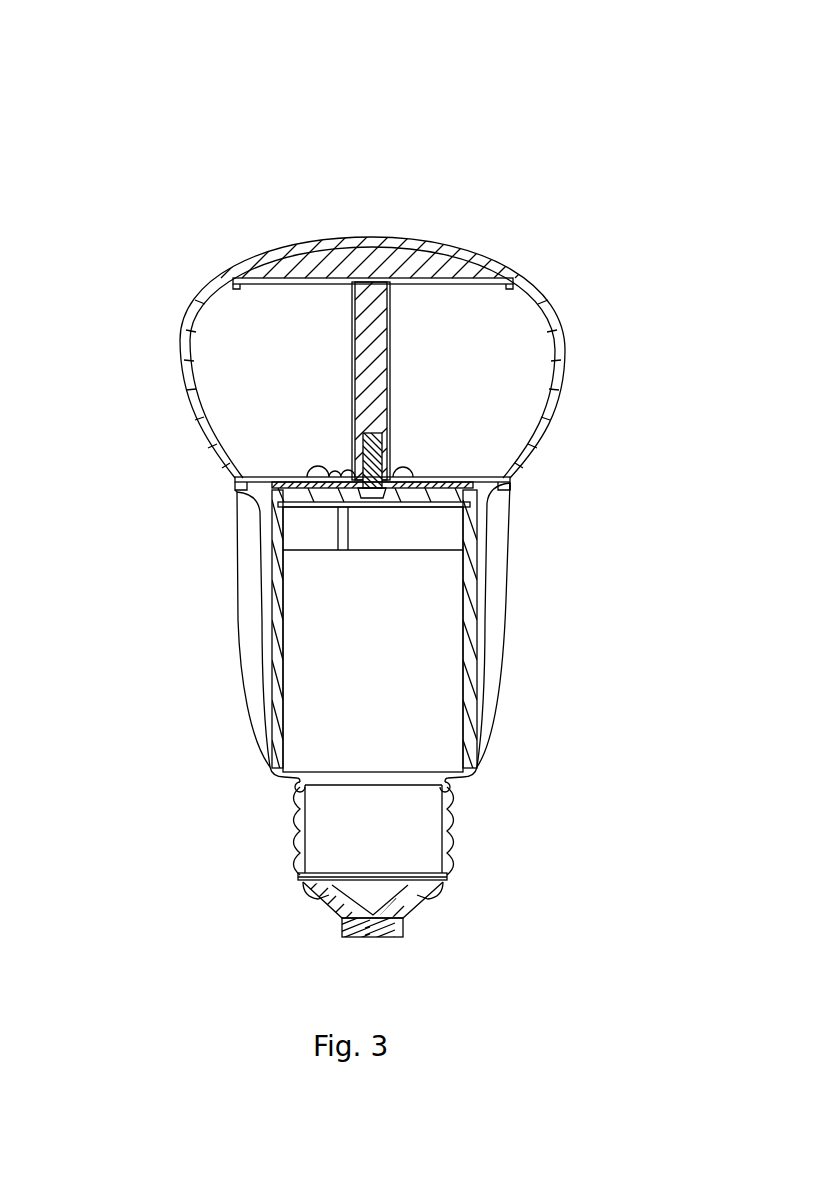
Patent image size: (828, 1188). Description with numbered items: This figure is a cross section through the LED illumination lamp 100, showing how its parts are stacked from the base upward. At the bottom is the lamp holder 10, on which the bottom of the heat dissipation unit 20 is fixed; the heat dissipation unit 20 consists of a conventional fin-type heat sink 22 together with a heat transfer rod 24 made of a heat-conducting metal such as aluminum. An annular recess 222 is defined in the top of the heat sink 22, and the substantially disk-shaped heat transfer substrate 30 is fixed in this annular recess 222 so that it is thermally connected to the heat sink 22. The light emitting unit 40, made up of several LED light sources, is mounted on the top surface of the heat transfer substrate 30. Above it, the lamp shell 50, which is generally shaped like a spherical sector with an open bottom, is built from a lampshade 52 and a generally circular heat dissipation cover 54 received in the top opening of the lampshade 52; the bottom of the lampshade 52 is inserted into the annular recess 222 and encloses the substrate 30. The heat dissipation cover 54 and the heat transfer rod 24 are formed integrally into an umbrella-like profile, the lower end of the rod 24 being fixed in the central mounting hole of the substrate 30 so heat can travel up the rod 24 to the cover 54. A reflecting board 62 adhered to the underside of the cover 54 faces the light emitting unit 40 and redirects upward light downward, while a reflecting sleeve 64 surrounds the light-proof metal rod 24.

The LED illumination lamp 100 is at (406, 45).
The lamp holder 10 is at (297, 826).
The heat dissipation unit 20 is at (505, 618).
The heat sink 22 is at (503, 545).
The annular recess 222 is at (237, 485).
The heat transfer rod 24 is at (388, 372).
The heat transfer substrate 30 is at (327, 474).
The light emitting unit 40 is at (305, 478).
The lamp shell 50 is at (185, 325).
The lampshade 52 is at (187, 347).
The heat dissipation cover 54 is at (463, 268).
The reflecting board 62 is at (233, 280).
The reflecting sleeve 64 is at (352, 318).